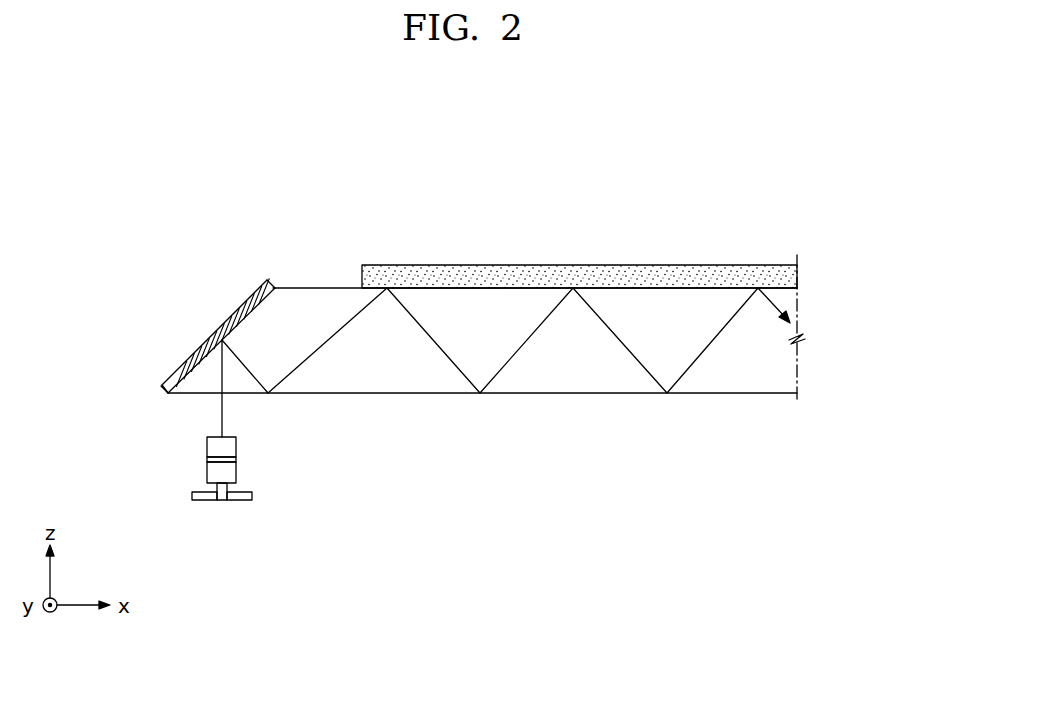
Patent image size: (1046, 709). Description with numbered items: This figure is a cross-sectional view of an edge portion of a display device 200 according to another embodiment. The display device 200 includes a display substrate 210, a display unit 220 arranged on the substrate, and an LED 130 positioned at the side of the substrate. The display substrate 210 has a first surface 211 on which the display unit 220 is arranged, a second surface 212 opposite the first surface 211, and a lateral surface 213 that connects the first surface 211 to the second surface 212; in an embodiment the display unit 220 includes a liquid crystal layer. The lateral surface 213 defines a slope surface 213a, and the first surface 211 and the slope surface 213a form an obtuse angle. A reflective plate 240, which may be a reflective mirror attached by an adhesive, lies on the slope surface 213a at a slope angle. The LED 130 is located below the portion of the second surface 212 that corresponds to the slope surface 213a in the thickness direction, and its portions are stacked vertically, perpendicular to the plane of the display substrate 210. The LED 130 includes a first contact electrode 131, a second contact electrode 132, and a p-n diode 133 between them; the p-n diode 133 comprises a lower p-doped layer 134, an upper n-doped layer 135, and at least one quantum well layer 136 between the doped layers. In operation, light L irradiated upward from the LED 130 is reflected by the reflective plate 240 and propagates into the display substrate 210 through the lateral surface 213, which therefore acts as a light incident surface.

The display device 200 is at (733, 182).
The display substrate 210 is at (792, 364).
The first surface 211 is at (326, 288).
The second surface 212 is at (373, 394).
The lateral surface 213 is at (198, 371).
The slope surface 213a is at (247, 321).
The display unit 220 is at (795, 274).
The reflective plate 240 is at (208, 338).
The light L is at (508, 362).
The LED 130 is at (267, 507).
The first contact electrode 131 is at (199, 500).
The second contact electrode 132 is at (238, 500).
The p-n diode 133 is at (125, 430).
The lower p-doped layer 134 is at (207, 476).
The upper n-doped layer 135 is at (207, 444).
The quantum well layer 136 is at (207, 460).